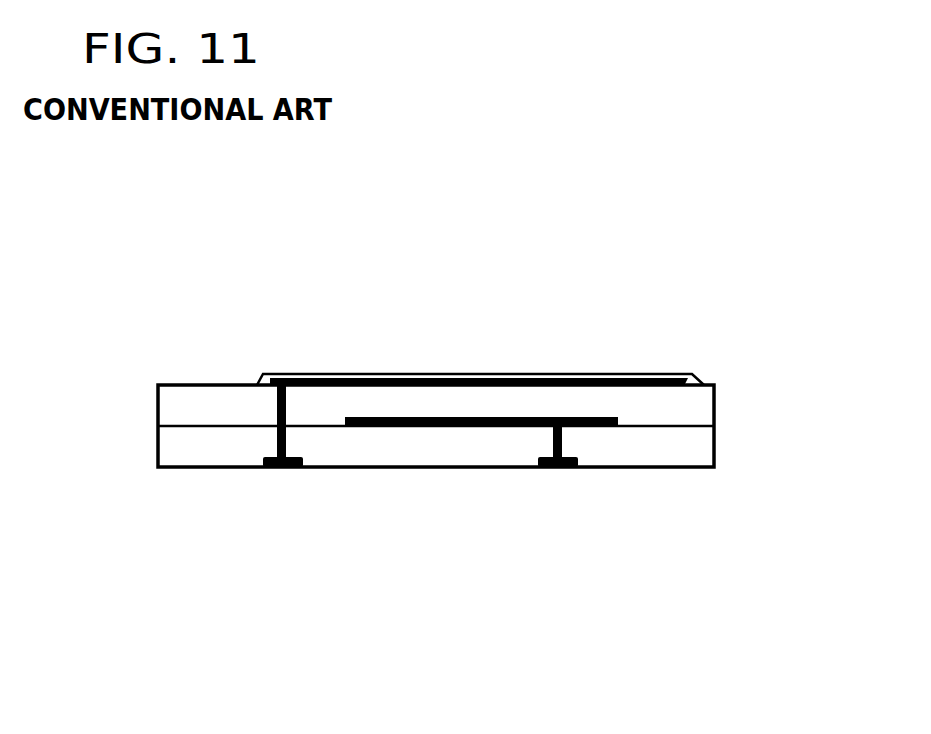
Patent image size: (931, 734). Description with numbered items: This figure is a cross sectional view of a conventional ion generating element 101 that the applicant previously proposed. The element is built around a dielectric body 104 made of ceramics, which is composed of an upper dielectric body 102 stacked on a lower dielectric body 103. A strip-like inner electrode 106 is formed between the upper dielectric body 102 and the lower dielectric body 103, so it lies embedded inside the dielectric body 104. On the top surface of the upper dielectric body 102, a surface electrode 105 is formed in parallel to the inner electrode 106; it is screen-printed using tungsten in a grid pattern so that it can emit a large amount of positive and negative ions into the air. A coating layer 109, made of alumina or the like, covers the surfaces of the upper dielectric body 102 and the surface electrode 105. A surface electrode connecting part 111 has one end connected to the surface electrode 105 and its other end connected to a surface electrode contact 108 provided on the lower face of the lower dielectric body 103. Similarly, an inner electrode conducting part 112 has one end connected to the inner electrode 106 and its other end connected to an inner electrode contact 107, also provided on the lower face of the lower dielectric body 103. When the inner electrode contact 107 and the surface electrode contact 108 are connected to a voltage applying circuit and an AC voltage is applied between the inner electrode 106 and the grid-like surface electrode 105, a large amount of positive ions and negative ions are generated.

The ion generating element 101 is at (708, 246).
The upper dielectric body 102 is at (627, 397).
The lower dielectric body 103 is at (680, 450).
The dielectric body 104 is at (725, 383).
The surface electrode 105 is at (360, 386).
The inner electrode 106 is at (428, 427).
The inner electrode contact 107 is at (582, 467).
The surface electrode contact 108 is at (307, 465).
The coating layer 109 is at (258, 383).
The surface electrode connecting part 111 is at (278, 436).
The inner electrode conducting part 112 is at (553, 440).